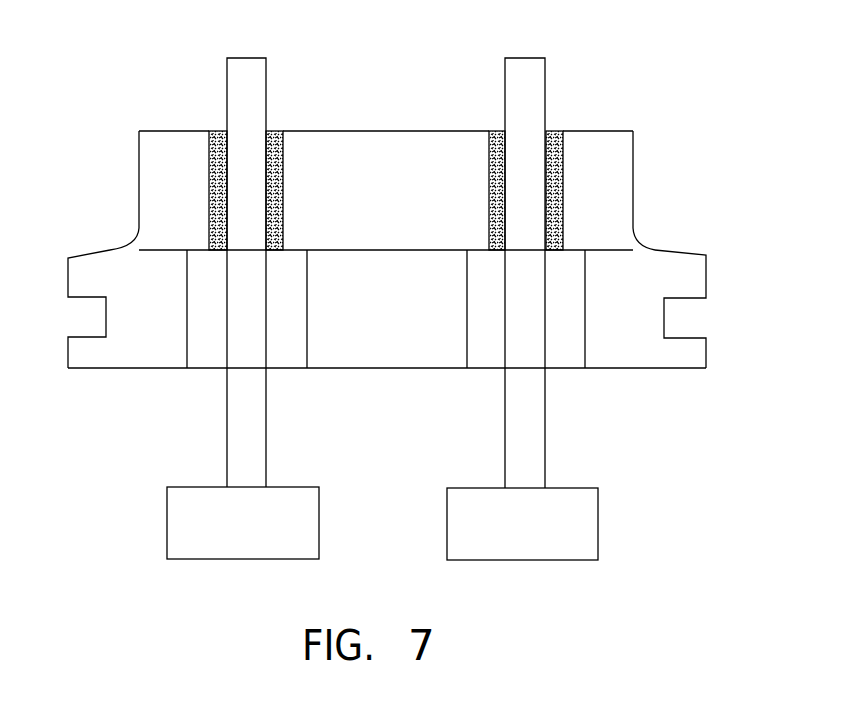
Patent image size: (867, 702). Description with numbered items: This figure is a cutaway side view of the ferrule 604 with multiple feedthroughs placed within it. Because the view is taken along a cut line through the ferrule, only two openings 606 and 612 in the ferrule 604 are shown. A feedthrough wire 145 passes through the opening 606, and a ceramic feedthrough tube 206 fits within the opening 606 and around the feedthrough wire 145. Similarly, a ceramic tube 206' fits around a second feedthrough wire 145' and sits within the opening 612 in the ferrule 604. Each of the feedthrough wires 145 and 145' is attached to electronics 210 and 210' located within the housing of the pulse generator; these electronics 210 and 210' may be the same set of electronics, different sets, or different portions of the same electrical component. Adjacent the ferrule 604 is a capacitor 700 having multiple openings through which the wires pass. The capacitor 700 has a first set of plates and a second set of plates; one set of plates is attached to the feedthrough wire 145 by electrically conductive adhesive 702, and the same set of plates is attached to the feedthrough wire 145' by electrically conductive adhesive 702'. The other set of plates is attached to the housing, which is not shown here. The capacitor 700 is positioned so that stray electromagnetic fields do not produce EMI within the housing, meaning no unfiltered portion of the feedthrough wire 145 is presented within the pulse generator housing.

The feedthrough wire 145 is at (217, 248).
The feedthrough wire 145' is at (497, 249).
The electrically conductive adhesive 702 is at (279, 168).
The electrically conductive adhesive 702' is at (494, 168).
The capacitor 700 is at (152, 171).
The ceramic feedthrough tube 206 is at (387, 337).
The ceramic tube 206' is at (668, 287).
The ferrule 604 is at (118, 355).
The opening 606 is at (187, 340).
The opening 612 is at (585, 349).
The electronics 210 is at (242, 499).
The electronics 210' is at (516, 499).